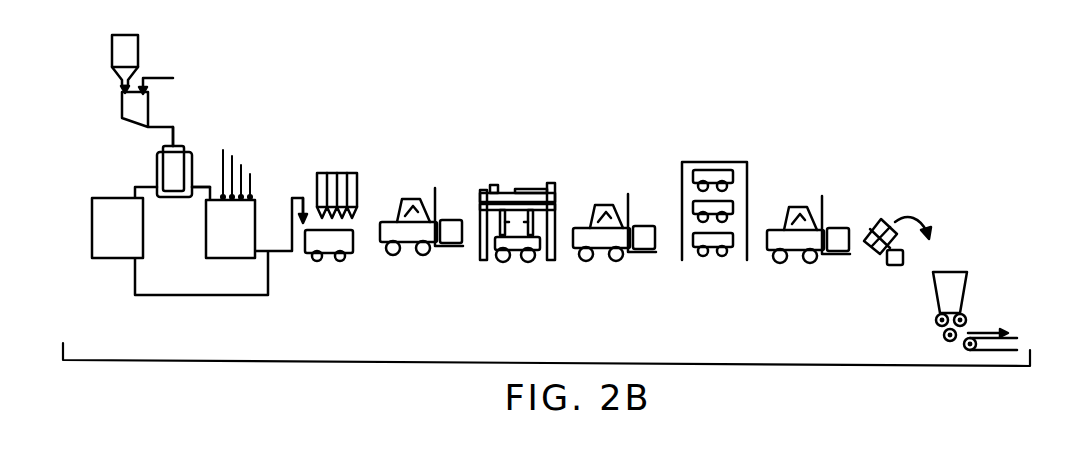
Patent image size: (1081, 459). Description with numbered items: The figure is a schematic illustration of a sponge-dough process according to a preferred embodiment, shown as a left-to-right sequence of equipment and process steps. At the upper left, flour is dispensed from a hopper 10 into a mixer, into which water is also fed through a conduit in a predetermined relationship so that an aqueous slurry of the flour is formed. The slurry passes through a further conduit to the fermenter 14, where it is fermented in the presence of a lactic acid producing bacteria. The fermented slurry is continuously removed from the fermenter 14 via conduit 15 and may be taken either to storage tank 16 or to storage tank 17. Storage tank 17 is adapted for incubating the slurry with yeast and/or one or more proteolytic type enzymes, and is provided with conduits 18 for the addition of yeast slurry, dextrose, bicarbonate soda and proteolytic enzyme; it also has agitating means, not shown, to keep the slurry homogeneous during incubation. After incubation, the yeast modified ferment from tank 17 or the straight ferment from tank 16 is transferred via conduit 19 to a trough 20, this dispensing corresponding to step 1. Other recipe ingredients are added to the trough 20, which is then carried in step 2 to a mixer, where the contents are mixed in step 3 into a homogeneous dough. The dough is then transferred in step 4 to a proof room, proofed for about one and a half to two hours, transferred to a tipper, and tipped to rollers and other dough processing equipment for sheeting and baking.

The hopper 10 is at (127, 53).
The fermenter 14 is at (178, 158).
The conduit 15 is at (203, 187).
The storage tank 16 is at (117, 247).
The storage tank 17 is at (227, 245).
The conduits 18 is at (263, 177).
The conduit 19 is at (303, 198).
The trough 20 is at (345, 238).
The step 1 is at (339, 240).
The step 2 is at (421, 244).
The step 3 is at (517, 242).
The step 4 is at (614, 246).